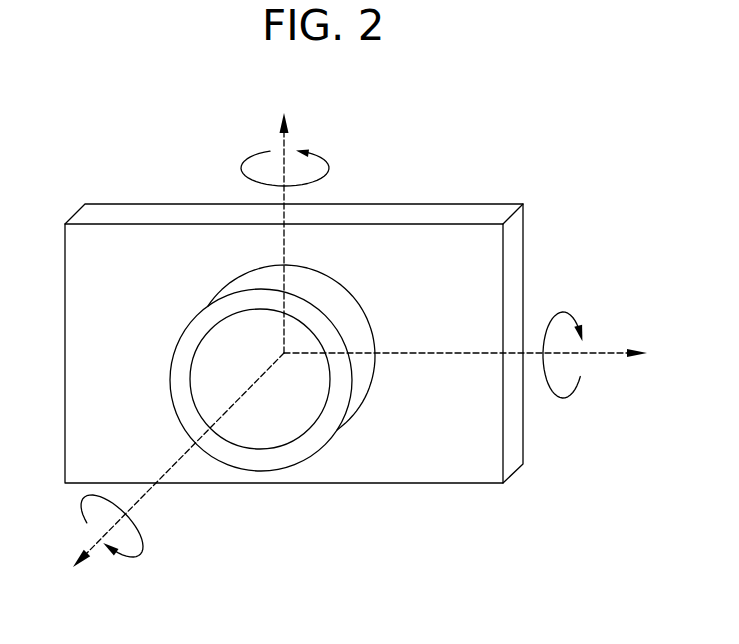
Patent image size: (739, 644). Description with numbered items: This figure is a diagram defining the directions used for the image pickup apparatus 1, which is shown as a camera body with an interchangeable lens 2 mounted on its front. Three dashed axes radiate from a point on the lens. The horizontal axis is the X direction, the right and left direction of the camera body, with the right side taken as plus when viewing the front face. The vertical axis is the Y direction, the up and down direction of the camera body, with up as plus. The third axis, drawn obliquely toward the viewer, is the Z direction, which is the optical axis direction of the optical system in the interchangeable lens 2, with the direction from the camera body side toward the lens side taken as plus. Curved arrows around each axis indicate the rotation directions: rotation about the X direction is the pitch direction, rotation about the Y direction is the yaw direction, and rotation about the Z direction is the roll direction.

The image pickup apparatus 1 is at (86, 167).
The interchangeable lens 2 is at (170, 371).
The X direction X is at (474, 343).
The Y direction Y is at (303, 220).
The Z direction Z is at (167, 469).